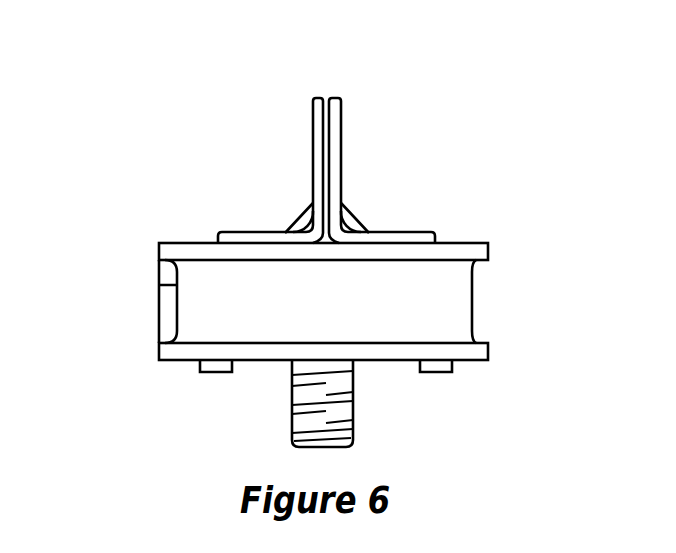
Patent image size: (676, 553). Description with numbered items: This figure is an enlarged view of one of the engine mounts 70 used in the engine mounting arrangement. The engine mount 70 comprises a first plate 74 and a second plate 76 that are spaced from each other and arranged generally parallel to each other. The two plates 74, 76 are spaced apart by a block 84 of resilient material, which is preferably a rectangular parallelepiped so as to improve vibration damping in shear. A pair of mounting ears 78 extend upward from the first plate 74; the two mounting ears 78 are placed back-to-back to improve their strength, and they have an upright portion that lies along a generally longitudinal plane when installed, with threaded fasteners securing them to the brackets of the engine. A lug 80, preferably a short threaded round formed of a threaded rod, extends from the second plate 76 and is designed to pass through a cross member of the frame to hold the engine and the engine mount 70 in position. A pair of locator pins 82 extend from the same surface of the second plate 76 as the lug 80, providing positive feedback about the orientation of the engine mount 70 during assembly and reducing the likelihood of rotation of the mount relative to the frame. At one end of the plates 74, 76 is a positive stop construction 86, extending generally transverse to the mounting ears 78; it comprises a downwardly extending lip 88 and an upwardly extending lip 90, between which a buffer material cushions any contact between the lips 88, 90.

The engine mount 70 is at (474, 171).
The first plate 74 is at (285, 250).
The second plate 76 is at (393, 353).
The mounting ears 78 is at (315, 98).
The lug 80 is at (300, 425).
The locator pins 82 is at (212, 373).
The block of resilient material 84 is at (443, 302).
The positive stop construction 86 is at (136, 289).
The downwardly extending lip 88 is at (159, 268).
The upwardly extending lip 90 is at (166, 320).